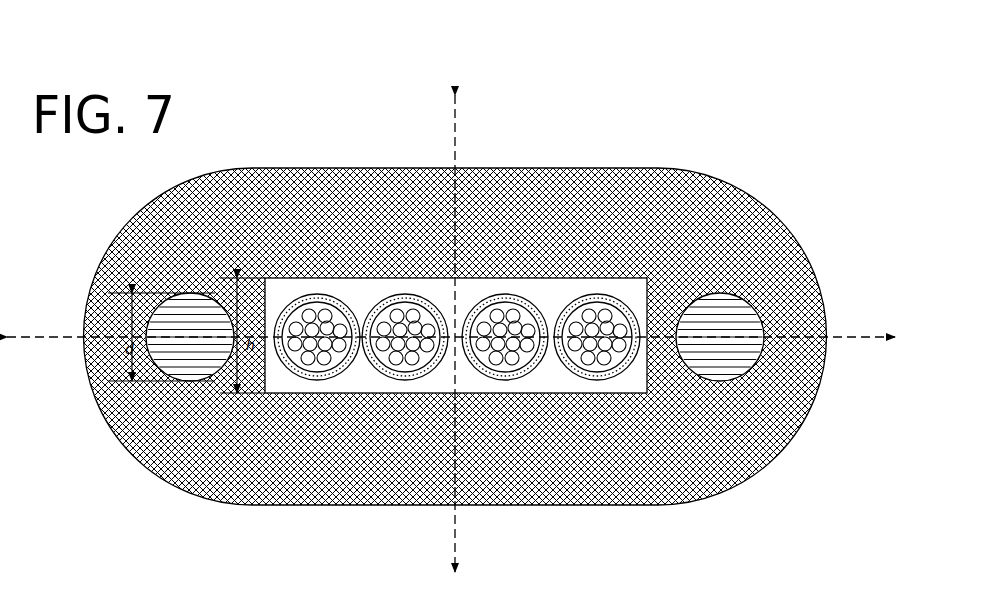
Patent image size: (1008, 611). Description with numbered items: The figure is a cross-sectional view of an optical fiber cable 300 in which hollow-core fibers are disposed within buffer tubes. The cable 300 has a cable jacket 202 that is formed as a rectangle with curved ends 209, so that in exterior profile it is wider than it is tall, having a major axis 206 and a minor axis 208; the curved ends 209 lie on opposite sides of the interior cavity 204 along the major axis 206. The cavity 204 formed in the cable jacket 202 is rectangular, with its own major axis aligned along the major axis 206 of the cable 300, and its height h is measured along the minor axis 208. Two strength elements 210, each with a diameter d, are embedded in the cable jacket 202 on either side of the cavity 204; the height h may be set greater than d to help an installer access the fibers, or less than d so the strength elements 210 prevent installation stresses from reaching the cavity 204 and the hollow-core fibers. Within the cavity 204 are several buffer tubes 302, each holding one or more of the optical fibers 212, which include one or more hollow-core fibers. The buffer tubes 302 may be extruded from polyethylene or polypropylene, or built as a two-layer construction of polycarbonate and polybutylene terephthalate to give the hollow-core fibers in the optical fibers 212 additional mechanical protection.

The optical fiber cable 300 is at (464, 294).
The cable jacket 202 is at (461, 318).
The interior cavity 204 is at (632, 387).
The major axis 206 is at (845, 337).
The minor axis 208 is at (458, 525).
The curved ends 209 is at (92, 290).
The strength elements 210 is at (157, 302).
The optical fibers 212 is at (391, 372).
The buffer tubes 302 is at (391, 298).